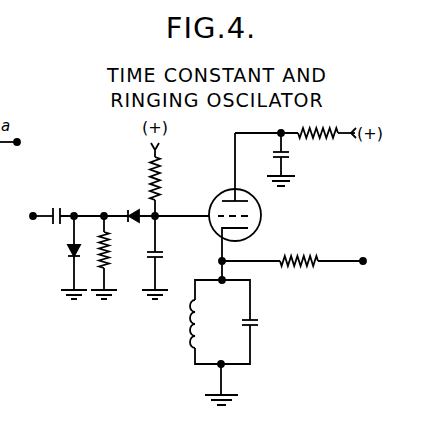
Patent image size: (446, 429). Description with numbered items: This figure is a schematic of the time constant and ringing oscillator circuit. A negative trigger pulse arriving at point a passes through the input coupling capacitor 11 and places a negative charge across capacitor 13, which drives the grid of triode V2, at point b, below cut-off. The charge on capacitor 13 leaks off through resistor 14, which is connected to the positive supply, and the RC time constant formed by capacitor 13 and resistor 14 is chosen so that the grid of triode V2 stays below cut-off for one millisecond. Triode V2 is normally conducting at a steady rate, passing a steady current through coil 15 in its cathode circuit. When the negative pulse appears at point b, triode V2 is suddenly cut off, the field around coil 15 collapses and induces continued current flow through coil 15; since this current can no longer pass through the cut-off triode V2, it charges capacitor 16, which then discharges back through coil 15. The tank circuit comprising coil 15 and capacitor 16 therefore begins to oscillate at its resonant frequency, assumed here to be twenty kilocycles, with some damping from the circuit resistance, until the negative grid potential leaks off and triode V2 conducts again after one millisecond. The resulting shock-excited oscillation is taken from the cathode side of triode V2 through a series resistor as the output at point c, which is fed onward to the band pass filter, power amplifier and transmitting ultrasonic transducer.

The coupling capacitor 11 is at (60, 213).
The capacitor 13 is at (160, 252).
The resistor 14 is at (150, 180).
The coil 15 is at (188, 329).
The capacitor 16 is at (256, 319).
The triode V2 is at (216, 199).
The point a is at (116, 214).
The point b is at (190, 215).
The output of the tank circuit c is at (338, 259).